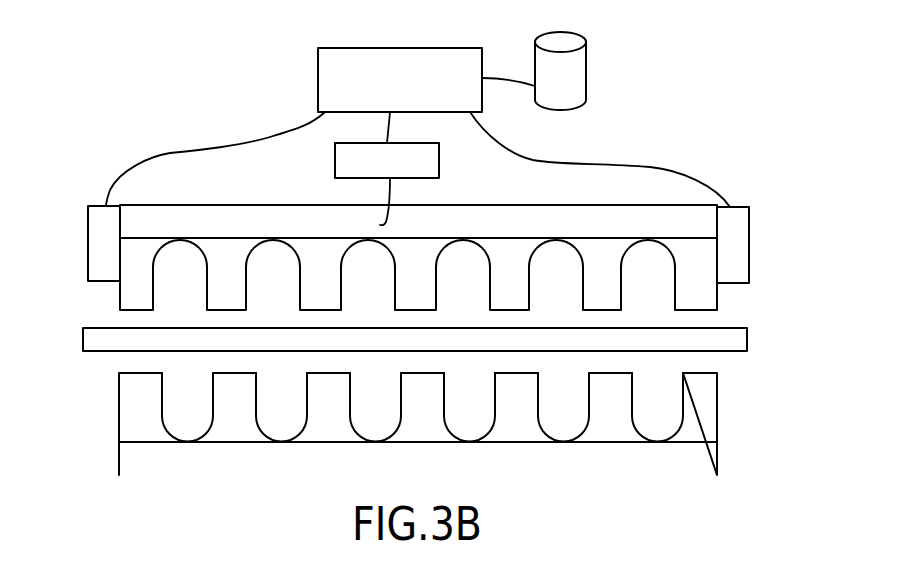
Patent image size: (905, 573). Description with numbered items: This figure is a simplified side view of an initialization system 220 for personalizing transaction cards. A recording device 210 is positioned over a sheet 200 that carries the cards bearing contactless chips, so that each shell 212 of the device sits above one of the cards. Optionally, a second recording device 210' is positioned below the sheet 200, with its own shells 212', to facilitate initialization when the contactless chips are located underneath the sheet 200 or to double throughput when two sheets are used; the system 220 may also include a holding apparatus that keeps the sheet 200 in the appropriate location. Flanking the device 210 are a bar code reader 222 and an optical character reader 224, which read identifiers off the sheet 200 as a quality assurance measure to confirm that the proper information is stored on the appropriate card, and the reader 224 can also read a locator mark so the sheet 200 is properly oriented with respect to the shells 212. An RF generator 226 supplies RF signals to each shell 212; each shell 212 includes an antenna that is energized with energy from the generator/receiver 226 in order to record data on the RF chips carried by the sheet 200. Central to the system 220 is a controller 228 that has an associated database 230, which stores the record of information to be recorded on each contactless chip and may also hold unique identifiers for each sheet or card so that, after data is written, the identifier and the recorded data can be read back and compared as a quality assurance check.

The sheet 200 is at (747, 340).
The device 210 is at (418, 216).
The second recording device 210' is at (377, 425).
The shell 212 is at (414, 281).
The shell 212' is at (422, 402).
The initialization system 220 is at (441, 165).
The bar code reader 222 is at (749, 243).
The optical character reader 224 is at (88, 240).
The RF generator 226 is at (425, 161).
The controller 228 is at (385, 60).
The database 230 is at (545, 75).